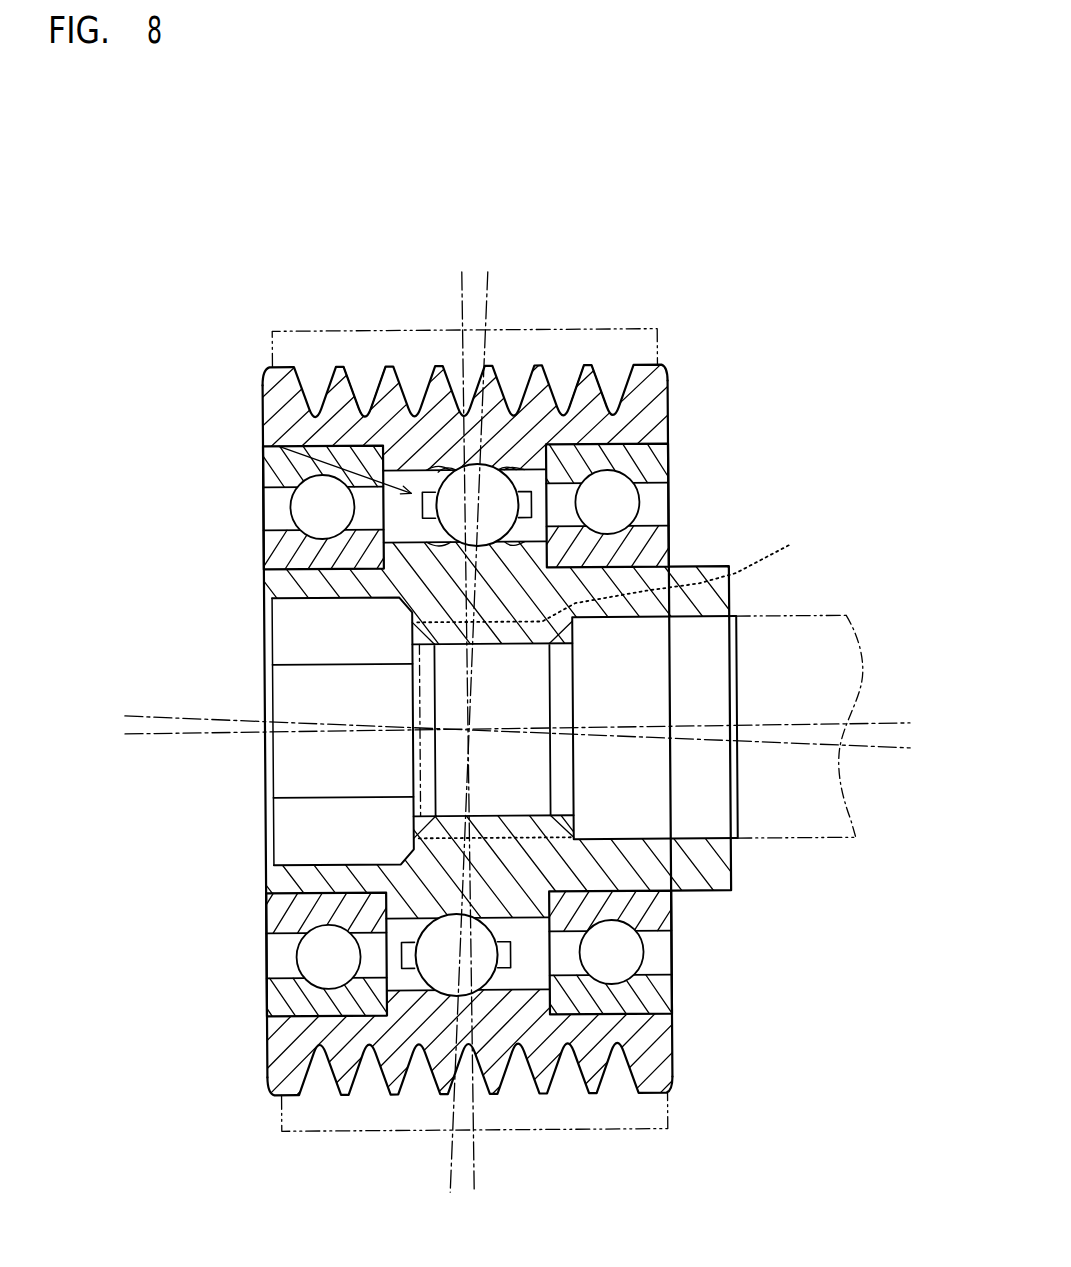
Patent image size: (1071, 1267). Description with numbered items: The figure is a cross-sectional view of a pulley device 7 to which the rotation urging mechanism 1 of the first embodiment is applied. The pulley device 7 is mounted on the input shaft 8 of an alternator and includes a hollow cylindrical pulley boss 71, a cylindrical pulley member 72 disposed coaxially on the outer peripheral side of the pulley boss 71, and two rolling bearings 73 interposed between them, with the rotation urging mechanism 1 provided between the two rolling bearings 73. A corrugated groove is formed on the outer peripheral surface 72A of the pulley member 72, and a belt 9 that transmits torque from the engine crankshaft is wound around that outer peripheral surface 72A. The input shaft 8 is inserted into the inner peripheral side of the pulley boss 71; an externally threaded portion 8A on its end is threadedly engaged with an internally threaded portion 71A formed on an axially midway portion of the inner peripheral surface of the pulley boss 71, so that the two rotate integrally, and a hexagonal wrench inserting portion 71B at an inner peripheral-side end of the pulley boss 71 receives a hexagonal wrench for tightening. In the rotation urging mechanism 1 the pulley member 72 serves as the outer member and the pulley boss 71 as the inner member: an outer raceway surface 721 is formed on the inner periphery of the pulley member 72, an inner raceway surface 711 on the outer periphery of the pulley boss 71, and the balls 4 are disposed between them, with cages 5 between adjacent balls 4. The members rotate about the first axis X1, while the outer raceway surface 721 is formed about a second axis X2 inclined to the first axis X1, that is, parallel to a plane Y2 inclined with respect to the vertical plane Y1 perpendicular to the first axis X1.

The rotation urging mechanism 1 is at (267, 384).
The balls 4 is at (500, 490).
The cages 5 is at (547, 504).
The pulley device 7 is at (708, 266).
The input shaft 8 is at (845, 678).
The externally threaded portion 8A is at (617, 678).
The belt 9 is at (596, 365).
The pulley boss 71 is at (258, 585).
The internally threaded portion 71A is at (478, 638).
The hexagonal wrench inserting portion 71B is at (291, 771).
The inner raceway surface 711 is at (441, 542).
The pulley member 72 is at (675, 388).
The outer peripheral surface 72A is at (366, 373).
The outer raceway surface 721 is at (444, 486).
The rolling bearings 73 is at (279, 474).
The first axis X1 is at (887, 724).
The second axis X2 is at (161, 715).
The vertical plane Y1 is at (466, 289).
The plane Y2 is at (492, 292).